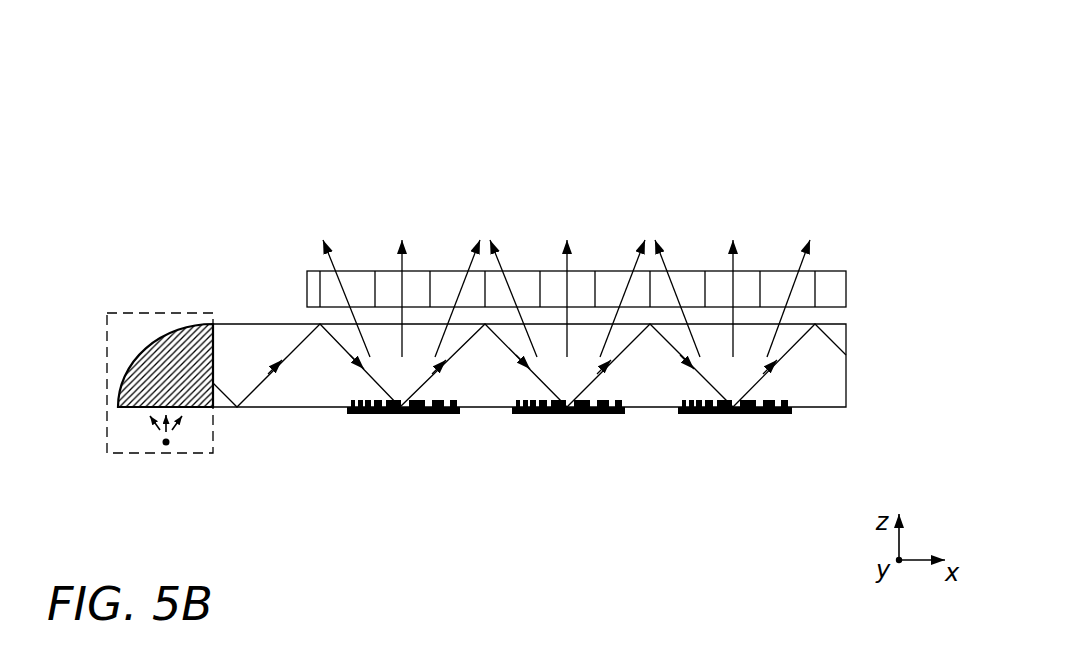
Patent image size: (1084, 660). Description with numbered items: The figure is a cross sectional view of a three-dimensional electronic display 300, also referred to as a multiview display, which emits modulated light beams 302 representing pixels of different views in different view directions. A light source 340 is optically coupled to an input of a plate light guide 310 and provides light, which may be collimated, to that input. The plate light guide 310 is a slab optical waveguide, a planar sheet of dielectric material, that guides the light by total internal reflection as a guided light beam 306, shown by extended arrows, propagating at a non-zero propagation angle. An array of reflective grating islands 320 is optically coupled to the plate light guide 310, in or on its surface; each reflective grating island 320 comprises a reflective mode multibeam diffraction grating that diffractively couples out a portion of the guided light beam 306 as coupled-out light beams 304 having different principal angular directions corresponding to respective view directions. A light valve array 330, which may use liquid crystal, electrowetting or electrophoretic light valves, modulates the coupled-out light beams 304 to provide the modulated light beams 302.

The three-dimensional (3D) electronic display 300 is at (235, 145).
The modulated light beams 302 is at (830, 251).
The coupled-out light beams 304 is at (878, 311).
The guided light beam 306 is at (277, 377).
The plate light guide 310 is at (860, 324).
The reflective grating island 320 is at (405, 422).
The light valve array 330 is at (307, 287).
The light source 340 is at (172, 464).